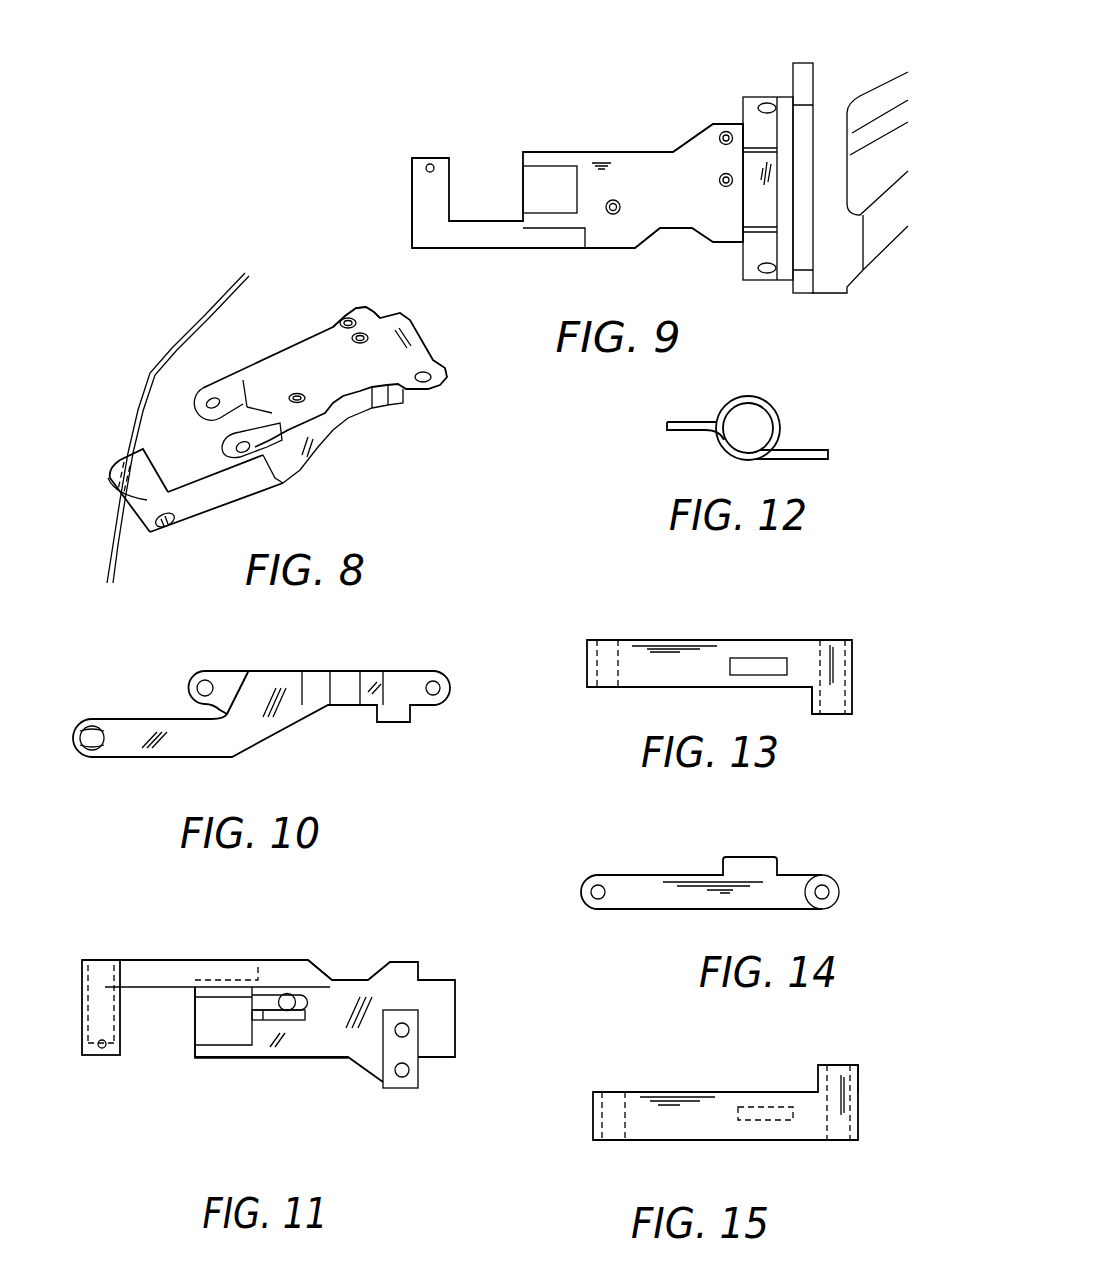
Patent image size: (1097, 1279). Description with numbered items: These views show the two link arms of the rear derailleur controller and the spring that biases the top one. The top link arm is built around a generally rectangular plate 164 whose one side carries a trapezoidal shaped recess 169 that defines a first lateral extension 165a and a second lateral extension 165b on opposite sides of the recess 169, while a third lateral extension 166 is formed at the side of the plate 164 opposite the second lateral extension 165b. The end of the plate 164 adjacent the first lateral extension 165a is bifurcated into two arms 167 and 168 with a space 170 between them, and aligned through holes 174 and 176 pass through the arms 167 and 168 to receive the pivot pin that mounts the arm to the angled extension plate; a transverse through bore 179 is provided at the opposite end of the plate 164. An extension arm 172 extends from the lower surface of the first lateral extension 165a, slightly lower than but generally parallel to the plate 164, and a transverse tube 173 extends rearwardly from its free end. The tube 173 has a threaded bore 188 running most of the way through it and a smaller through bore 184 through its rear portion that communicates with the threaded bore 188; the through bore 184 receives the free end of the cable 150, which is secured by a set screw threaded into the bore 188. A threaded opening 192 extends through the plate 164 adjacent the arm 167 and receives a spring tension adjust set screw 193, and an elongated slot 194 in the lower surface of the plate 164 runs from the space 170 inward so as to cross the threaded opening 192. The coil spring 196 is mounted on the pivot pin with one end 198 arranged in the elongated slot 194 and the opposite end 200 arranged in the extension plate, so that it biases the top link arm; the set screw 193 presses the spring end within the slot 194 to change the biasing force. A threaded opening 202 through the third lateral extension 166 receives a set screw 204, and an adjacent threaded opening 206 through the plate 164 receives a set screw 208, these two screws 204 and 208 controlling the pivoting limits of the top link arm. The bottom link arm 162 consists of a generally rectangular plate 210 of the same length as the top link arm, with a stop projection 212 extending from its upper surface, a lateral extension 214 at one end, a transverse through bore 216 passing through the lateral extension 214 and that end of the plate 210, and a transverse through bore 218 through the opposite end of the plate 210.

In FIG. 8, the cable 150 is at (152, 385).
In FIG. 13, the bottom link arm 162 is at (802, 624).
In FIG. 14, the bottom link arm 162 is at (812, 857).
In FIG. 15, the bottom link arm 162 is at (795, 1066).
In FIG. 9, the plate 164 is at (582, 150).
In FIG. 8, the plate 164 is at (273, 367).
In FIG. 10, the plate 164 is at (315, 670).
In FIG. 11, the plate 164 is at (347, 1048).
In FIG. 9, the first lateral extension 165a is at (608, 250).
In FIG. 8, the first lateral extension 165a is at (323, 443).
In FIG. 10, the first lateral extension 165a is at (283, 713).
In FIG. 11, the first lateral extension 165a is at (278, 967).
In FIG. 9, the second lateral extension 165b is at (723, 233).
In FIG. 8, the second lateral extension 165b is at (400, 395).
In FIG. 10, the second lateral extension 165b is at (392, 678).
In FIG. 11, the second lateral extension 165b is at (405, 972).
In FIG. 9, the third lateral extension 166 is at (707, 123).
In FIG. 8, the third lateral extension 166 is at (333, 327).
In FIG. 11, the third lateral extension 166 is at (377, 1088).
In FIG. 9, the arm 167 is at (547, 223).
In FIG. 8, the arm 167 is at (283, 483).
In FIG. 10, the arm 167 is at (225, 678).
In FIG. 11, the arm 167 is at (202, 1000).
In FIG. 9, the arm 168 is at (532, 152).
In FIG. 8, the arm 168 is at (207, 405).
In FIG. 11, the arm 168 is at (218, 1060).
In FIG. 9, the recess 169 is at (677, 230).
In FIG. 8, the recess 169 is at (355, 413).
In FIG. 10, the recess 169 is at (347, 697).
In FIG. 11, the recess 169 is at (347, 978).
In FIG. 9, the space 170 is at (553, 190).
In FIG. 8, the space 170 is at (272, 413).
In FIG. 11, the space 170 is at (240, 1040).
In FIG. 9, the extension arm 172 is at (485, 240).
In FIG. 8, the extension arm 172 is at (228, 500).
In FIG. 10, the extension arm 172 is at (175, 750).
In FIG. 11, the extension arm 172 is at (158, 965).
In FIG. 9, the transverse tube 173 is at (423, 222).
In FIG. 8, the transverse tube 173 is at (120, 503).
In FIG. 11, the transverse tube 173 is at (82, 1028).
In FIG. 8, the through hole 174 is at (233, 457).
In FIG. 10, the through hole 174 is at (192, 692).
In FIG. 8, the through hole 176 is at (188, 400).
In FIG. 8, the transverse through bore 179 is at (447, 377).
In FIG. 10, the transverse through bore 179 is at (440, 688).
In FIG. 9, the through bore 184 is at (423, 157).
In FIG. 8, the through bore 184 is at (118, 458).
In FIG. 10, the through bore 184 is at (88, 722).
In FIG. 11, the through bore 184 is at (98, 1052).
In FIG. 8, the threaded bore 188 is at (165, 526).
In FIG. 10, the threaded bore 188 is at (80, 746).
In FIG. 11, the threaded bore 188 is at (113, 970).
In FIG. 9, the threaded opening 192 is at (616, 202).
In FIG. 8, the threaded opening 192 is at (300, 393).
In FIG. 11, the threaded opening 192 is at (285, 1011).
In FIG. 9, the spring tension adjust set screw 193 is at (625, 207).
In FIG. 8, the spring tension adjust set screw 193 is at (305, 397).
In FIG. 11, the elongated slot 194 is at (253, 1015).
In FIG. 12, the coil spring 196 is at (773, 410).
In FIG. 12, the spring end 198 is at (807, 448).
In FIG. 12, the spring end 200 is at (678, 430).
In FIG. 9, the threaded opening 202 is at (731, 134).
In FIG. 9, the set screw 204 is at (728, 131).
In FIG. 9, the threaded opening 206 is at (720, 175).
In FIG. 9, the set screw 208 is at (720, 186).
In FIG. 13, the plate 210 is at (663, 638).
In FIG. 14, the plate 210 is at (663, 898).
In FIG. 15, the plate 210 is at (657, 1127).
In FIG. 13, the stop projection 212 is at (752, 658).
In FIG. 14, the stop projection 212 is at (742, 855).
In FIG. 15, the stop projection 212 is at (762, 1122).
In FIG. 13, the lateral extension 214 is at (853, 707).
In FIG. 15, the lateral extension 214 is at (860, 1075).
In FIG. 13, the transverse through bore 216 is at (837, 667).
In FIG. 14, the transverse through bore 216 is at (828, 898).
In FIG. 15, the transverse through bore 216 is at (852, 1115).
In FIG. 13, the transverse through bore 218 is at (598, 660).
In FIG. 14, the transverse through bore 218 is at (593, 903).
In FIG. 15, the transverse through bore 218 is at (602, 1120).